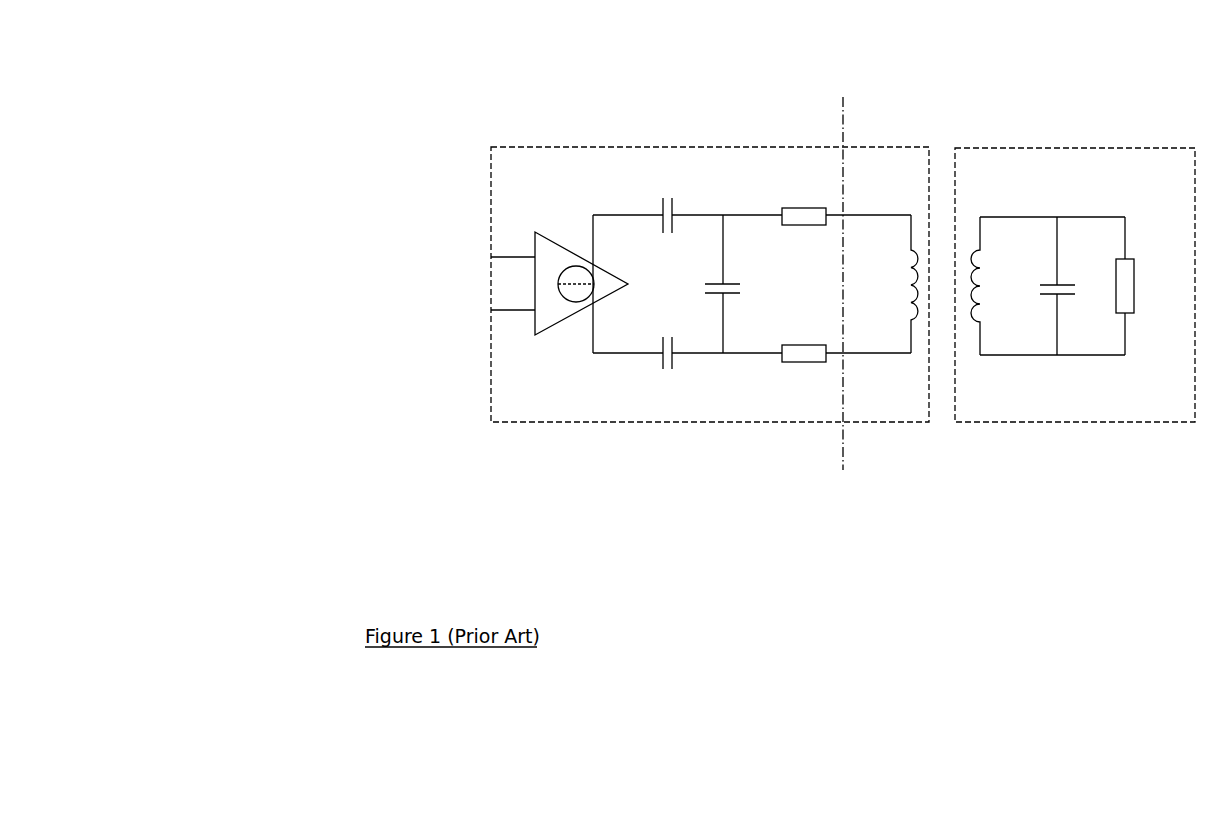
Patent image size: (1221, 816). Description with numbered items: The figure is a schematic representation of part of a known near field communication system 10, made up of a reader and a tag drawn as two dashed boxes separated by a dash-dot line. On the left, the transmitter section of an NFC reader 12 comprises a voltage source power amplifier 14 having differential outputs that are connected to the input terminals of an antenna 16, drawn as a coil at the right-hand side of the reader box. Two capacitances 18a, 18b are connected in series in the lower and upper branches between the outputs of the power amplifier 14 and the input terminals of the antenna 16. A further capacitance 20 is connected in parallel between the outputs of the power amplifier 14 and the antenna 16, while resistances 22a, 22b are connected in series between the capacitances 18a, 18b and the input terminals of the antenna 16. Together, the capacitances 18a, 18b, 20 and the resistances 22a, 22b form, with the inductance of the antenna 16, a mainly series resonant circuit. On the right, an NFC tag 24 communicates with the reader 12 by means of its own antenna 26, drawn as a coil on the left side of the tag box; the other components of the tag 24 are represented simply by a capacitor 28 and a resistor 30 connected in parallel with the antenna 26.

The near field communication system 10 is at (514, 71).
The NFC reader 12 is at (627, 147).
The voltage source power amplifier 14 is at (568, 312).
The antenna 16 is at (911, 296).
The capacitance 18a is at (663, 366).
The capacitance 18b is at (663, 200).
The further capacitance 20 is at (729, 294).
The resistance 22a is at (792, 356).
The resistance 22b is at (791, 210).
The NFC tag 24 is at (1013, 148).
The antenna 26 is at (983, 312).
The capacitor 28 is at (1061, 295).
The resistor 30 is at (1128, 294).